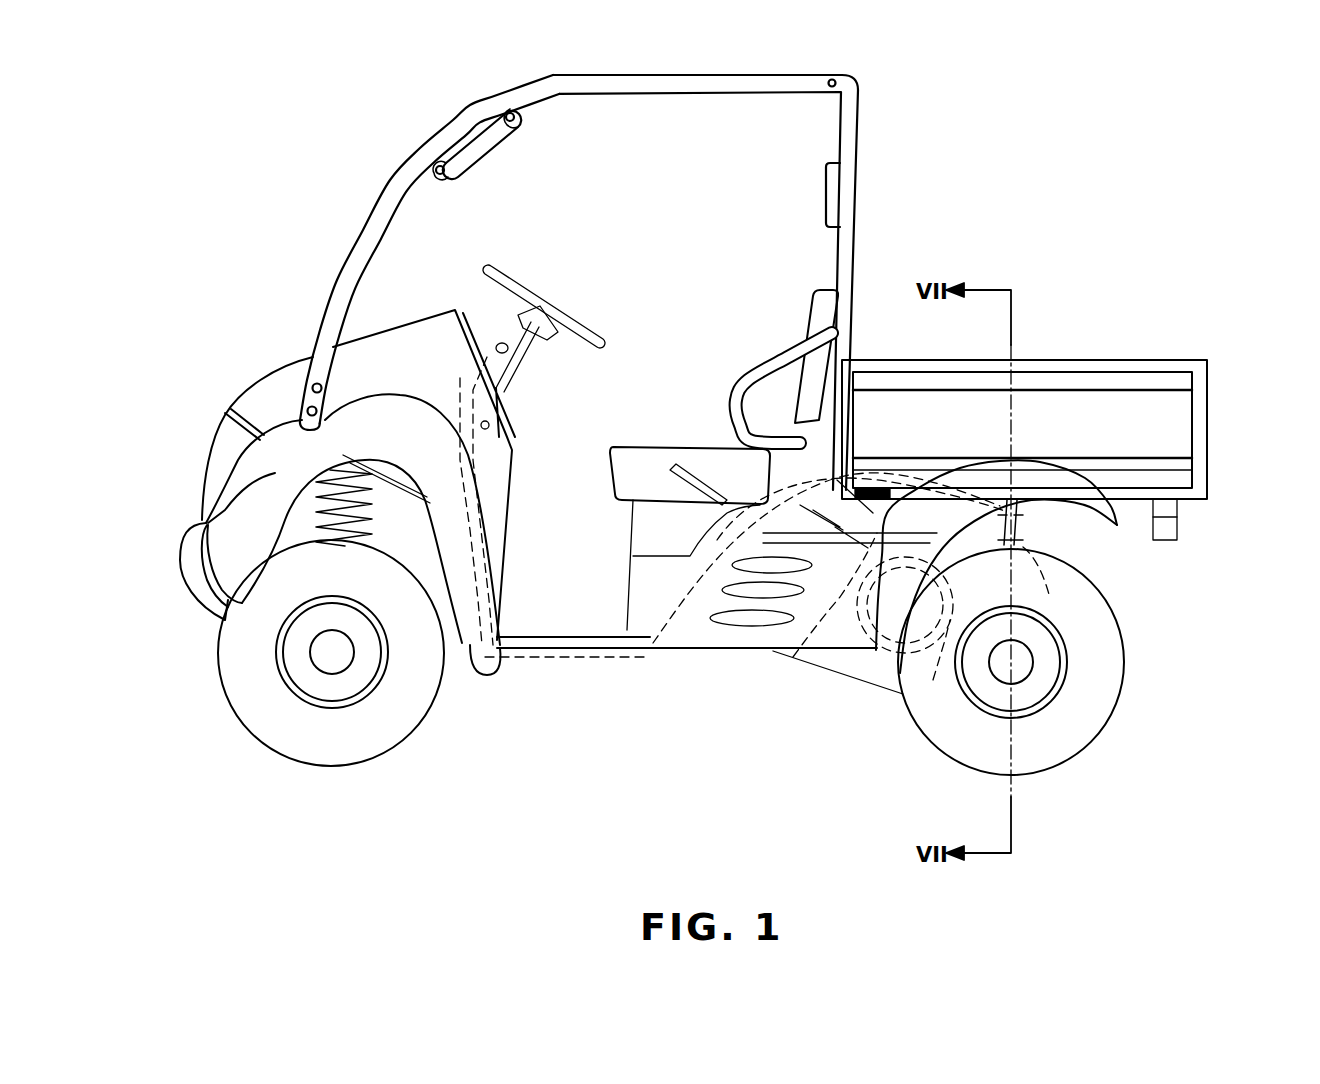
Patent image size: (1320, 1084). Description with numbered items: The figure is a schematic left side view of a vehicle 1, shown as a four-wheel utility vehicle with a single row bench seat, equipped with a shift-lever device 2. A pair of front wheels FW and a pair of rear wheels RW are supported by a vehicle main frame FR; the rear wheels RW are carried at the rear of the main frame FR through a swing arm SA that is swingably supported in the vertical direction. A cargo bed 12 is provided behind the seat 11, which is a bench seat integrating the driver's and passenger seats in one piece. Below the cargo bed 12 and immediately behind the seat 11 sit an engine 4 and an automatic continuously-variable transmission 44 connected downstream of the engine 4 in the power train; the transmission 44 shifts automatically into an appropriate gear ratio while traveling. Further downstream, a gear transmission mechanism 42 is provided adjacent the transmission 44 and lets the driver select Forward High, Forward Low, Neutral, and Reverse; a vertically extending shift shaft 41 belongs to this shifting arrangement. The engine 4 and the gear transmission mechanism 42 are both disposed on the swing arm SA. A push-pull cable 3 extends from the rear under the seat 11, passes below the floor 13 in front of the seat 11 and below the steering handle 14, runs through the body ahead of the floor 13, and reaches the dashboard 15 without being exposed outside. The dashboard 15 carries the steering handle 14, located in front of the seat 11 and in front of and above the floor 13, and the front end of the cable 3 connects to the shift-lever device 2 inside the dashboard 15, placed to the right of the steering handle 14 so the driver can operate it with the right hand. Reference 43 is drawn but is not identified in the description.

The vehicle 1 is at (945, 181).
The shift-lever device 2 is at (467, 378).
The push-pull cable 3 is at (682, 652).
The engine 4 is at (793, 657).
The seat 11 is at (666, 447).
The cargo bed 12 is at (1132, 360).
The floor 13 is at (560, 637).
The steering handle 14 is at (535, 290).
The dashboard 15 is at (495, 360).
The shift shaft 41 is at (1005, 512).
The gear transmission mechanism 42 is at (1050, 598).
The drive shaft 43 is at (873, 678).
The automatic continuously-variable transmission 44 is at (933, 680).
The front wheels FW is at (337, 753).
The rear wheels RW is at (1067, 740).
The swing arm SA is at (840, 663).
The vehicle main frame FR is at (597, 640).